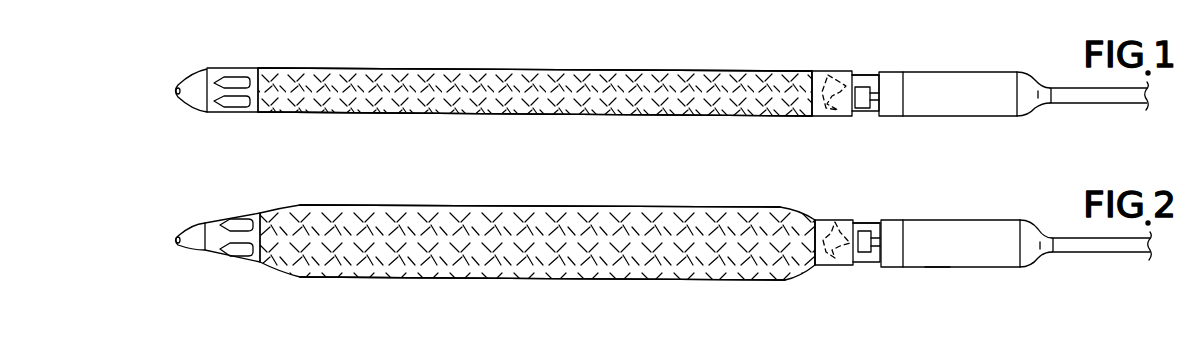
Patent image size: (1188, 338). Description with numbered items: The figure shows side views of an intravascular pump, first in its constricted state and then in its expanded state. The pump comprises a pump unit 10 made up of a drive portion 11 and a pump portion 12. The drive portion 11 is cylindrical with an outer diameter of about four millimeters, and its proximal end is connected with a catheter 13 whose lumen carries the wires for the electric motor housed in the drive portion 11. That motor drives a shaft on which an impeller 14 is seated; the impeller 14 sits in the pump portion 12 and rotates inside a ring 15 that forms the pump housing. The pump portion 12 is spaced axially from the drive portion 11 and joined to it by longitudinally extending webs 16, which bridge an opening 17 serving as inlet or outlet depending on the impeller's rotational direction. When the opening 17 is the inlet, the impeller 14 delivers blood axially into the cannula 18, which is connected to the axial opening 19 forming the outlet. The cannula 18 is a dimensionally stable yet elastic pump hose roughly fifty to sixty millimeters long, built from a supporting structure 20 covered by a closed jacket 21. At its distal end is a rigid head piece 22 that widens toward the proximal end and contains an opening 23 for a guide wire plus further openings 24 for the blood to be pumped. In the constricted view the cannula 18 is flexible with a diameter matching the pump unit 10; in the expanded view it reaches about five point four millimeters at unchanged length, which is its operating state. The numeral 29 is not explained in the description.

In FIG. 1, the pump unit 10 is at (910, 62).
In FIG. 2, the pump unit 10 is at (908, 206).
In FIG. 1, the drive portion 11 is at (964, 94).
In FIG. 2, the drive portion 11 is at (960, 254).
In FIG. 1, the pump portion 12 is at (825, 124).
In FIG. 2, the pump portion 12 is at (831, 280).
In FIG. 1, the catheter 13 is at (1097, 92).
In FIG. 2, the catheter 13 is at (1102, 242).
In FIG. 1, the impeller 14 is at (828, 73).
In FIG. 2, the impeller 14 is at (835, 220).
In FIG. 1, the ring 15 is at (845, 120).
In FIG. 2, the ring 15 is at (847, 267).
In FIG. 1, the webs 16 is at (864, 75).
In FIG. 2, the webs 16 is at (868, 222).
In FIG. 1, the opening 17 is at (865, 124).
In FIG. 2, the opening 17 is at (866, 271).
In FIG. 1, the cannula 18 is at (564, 62).
In FIG. 2, the cannula 18 is at (564, 195).
In FIG. 1, the axial opening 19 is at (810, 96).
In FIG. 2, the axial opening 19 is at (808, 236).
In FIG. 1, the supporting structure 20 is at (465, 96).
In FIG. 2, the supporting structure 20 is at (453, 264).
In FIG. 1, the closed jacket 21 is at (670, 72).
In FIG. 2, the closed jacket 21 is at (679, 209).
In FIG. 1, the head piece 22 is at (195, 82).
In FIG. 2, the head piece 22 is at (195, 232).
In FIG. 1, the opening 23 is at (177, 91).
In FIG. 2, the opening 23 is at (178, 241).
In FIG. 1, the openings 24 is at (232, 79).
In FIG. 2, the openings 24 is at (235, 228).
In FIG. 2, the housing 29 is at (936, 302).